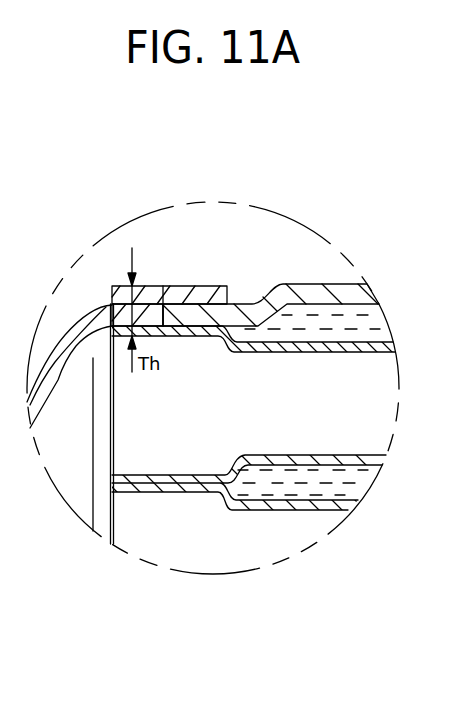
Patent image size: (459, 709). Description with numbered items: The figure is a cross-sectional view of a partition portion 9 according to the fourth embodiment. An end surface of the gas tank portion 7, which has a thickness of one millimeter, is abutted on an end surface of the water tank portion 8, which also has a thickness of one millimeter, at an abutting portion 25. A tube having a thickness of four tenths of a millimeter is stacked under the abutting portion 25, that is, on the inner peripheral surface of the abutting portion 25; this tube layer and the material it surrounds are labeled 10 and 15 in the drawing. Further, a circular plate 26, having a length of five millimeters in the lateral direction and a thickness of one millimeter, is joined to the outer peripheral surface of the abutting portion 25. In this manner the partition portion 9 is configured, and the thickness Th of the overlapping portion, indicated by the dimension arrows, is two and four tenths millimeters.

The gas tank portion 7 is at (67, 340).
The water tank portion 8 is at (305, 293).
The partition portion 9 is at (178, 227).
The sheath layer 10 is at (380, 352).
The core / filler 15 is at (371, 323).
The abutting portion 25 is at (164, 286).
The circular plate 26 is at (144, 266).